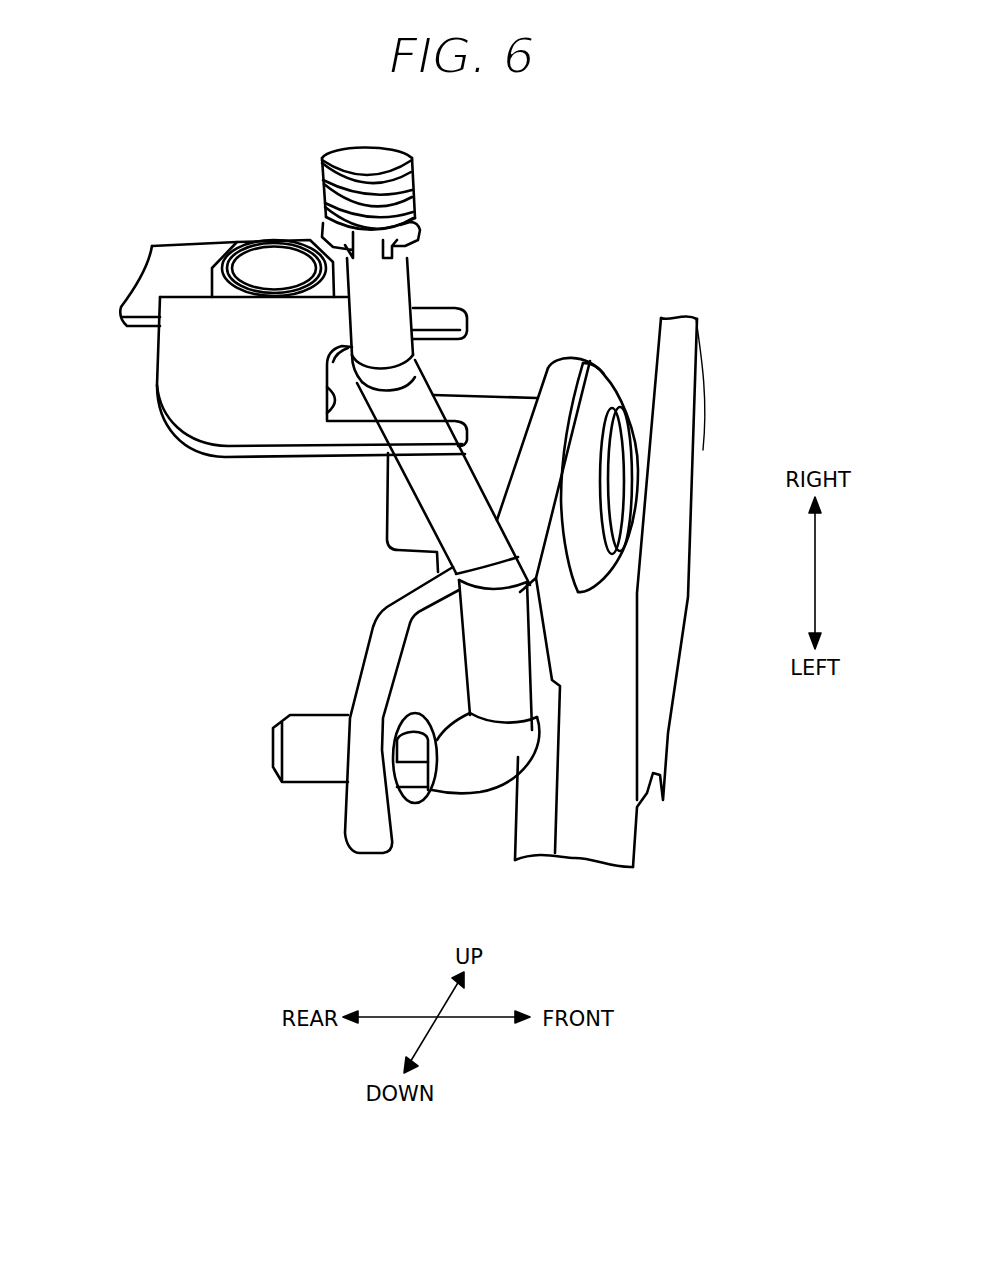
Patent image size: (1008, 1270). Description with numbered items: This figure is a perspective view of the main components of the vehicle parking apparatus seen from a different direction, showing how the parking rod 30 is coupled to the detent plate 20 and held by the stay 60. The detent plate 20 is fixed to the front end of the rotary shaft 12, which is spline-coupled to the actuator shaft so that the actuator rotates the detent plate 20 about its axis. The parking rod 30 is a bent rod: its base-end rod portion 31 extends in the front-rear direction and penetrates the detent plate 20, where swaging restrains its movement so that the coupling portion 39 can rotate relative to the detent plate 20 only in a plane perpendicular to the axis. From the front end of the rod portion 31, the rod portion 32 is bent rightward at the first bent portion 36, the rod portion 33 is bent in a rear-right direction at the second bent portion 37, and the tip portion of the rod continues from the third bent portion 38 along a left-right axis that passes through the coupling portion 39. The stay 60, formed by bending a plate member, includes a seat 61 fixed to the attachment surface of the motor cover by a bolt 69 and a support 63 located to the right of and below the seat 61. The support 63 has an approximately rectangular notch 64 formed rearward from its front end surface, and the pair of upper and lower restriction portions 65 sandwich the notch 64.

The rotary shaft 12 is at (623, 490).
The detent plate 20 is at (668, 548).
The parking rod 30 is at (472, 620).
The rod portion 31 is at (313, 782).
The rod portion 32 is at (530, 643).
The rod portion 33 is at (435, 537).
The first bent portion 36 is at (512, 768).
The second bent portion 37 is at (512, 572).
The third bent portion 38 is at (420, 353).
The coupling portion 39 is at (395, 802).
The stay 60 is at (266, 385).
The seat 61 is at (150, 272).
The support 63 is at (245, 457).
The notch 64 is at (338, 406).
The restriction portions 65 is at (440, 315).
The bolt 69 is at (276, 240).